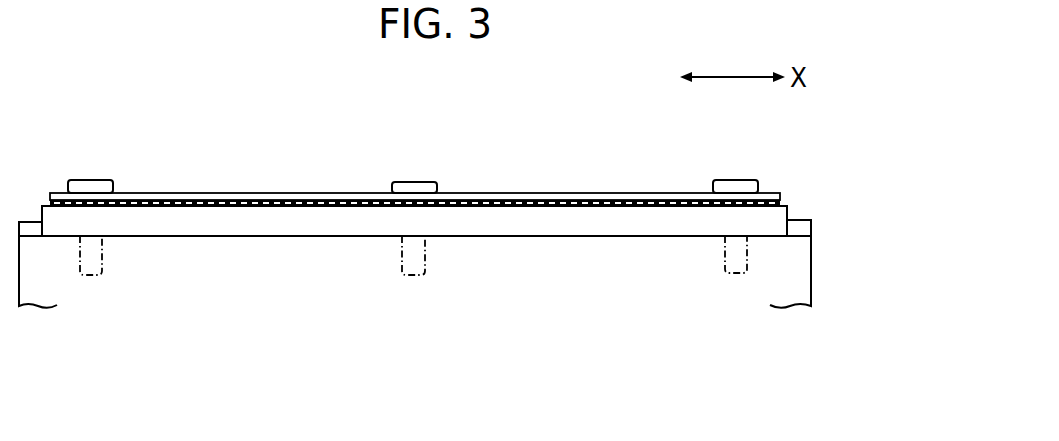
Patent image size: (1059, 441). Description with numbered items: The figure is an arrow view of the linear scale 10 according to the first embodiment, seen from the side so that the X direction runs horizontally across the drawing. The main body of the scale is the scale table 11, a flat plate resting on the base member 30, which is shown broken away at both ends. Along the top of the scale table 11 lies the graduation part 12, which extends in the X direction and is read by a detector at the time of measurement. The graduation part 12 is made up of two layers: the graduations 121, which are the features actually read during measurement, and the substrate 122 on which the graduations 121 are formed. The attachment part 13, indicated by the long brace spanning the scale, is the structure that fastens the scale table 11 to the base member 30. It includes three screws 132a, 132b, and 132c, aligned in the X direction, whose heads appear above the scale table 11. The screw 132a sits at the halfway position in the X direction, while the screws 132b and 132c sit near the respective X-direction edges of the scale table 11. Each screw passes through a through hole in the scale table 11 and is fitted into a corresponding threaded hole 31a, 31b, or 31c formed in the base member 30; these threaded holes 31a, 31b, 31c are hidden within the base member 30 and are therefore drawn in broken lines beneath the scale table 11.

The linear scale 10 is at (242, 84).
The scale table 11 is at (571, 214).
The graduation part 12 is at (862, 132).
The graduations 121 is at (780, 201).
The substrate 122 is at (780, 194).
The attachment part 13 is at (765, 122).
The screw 132a is at (413, 185).
The screw 132b is at (93, 185).
The screw 132c is at (735, 182).
The base member 30 is at (797, 274).
The threaded hole 31a is at (426, 257).
The threaded hole 31b is at (104, 257).
The threaded hole 31c is at (724, 256).